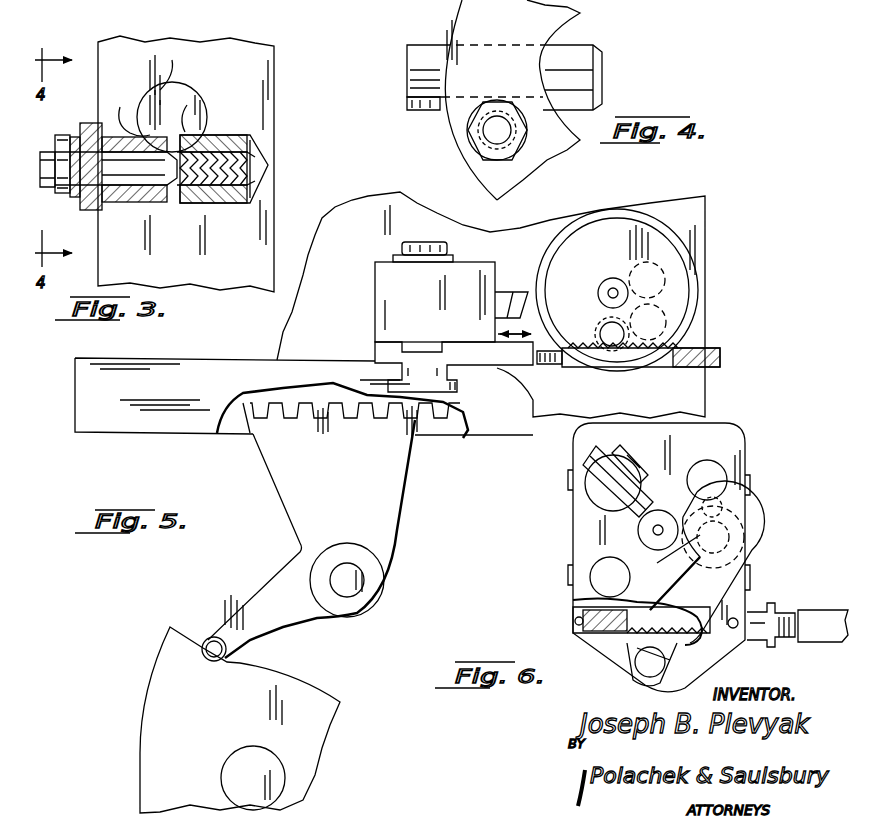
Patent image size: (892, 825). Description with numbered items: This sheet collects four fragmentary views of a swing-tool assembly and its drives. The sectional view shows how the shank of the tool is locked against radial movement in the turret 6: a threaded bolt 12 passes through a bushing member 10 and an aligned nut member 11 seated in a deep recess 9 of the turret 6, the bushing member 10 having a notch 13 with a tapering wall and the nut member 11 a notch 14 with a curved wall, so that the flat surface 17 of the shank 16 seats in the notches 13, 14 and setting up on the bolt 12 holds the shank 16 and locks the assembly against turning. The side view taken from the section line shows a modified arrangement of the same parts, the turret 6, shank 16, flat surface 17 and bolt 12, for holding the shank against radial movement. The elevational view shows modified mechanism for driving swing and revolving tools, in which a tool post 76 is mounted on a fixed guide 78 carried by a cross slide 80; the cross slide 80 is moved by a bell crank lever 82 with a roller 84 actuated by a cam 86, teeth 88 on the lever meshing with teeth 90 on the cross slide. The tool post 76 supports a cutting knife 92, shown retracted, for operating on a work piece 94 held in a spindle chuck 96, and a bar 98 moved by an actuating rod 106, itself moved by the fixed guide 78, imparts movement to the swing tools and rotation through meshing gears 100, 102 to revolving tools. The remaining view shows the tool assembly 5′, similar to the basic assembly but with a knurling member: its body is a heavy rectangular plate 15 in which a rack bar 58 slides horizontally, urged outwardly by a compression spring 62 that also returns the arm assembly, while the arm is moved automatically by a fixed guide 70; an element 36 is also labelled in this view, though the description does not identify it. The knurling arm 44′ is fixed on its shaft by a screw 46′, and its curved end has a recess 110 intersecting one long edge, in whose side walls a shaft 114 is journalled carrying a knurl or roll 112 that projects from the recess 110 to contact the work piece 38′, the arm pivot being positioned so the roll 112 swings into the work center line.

In FIG. 3, the turret 6 is at (265, 208).
In FIG. 4, the turret 6 is at (480, 10).
In FIG. 3, the deep recess 9 is at (248, 152).
In FIG. 3, the bushing member 10 is at (140, 205).
In FIG. 3, the nut member 11 is at (222, 205).
In FIG. 3, the threaded bolt 12 is at (46, 150).
In FIG. 4, the threaded bolt 12 is at (490, 133).
In FIG. 3, the notch 13 is at (170, 128).
In FIG. 3, the notch 14 is at (188, 111).
In FIG. 3, the shank 16 is at (165, 82).
In FIG. 4, the shank 16 is at (583, 47).
In FIG. 3, the flat surface 17 is at (122, 110).
In FIG. 4, the flat surface 17 is at (415, 103).
In FIG. 5, the tool post 76 is at (465, 277).
In FIG. 5, the fixed guide 78 is at (478, 352).
In FIG. 5, the cross slide 80 is at (205, 372).
In FIG. 5, the bell crank lever 82 is at (395, 497).
In FIG. 5, the roller 84 is at (210, 640).
In FIG. 5, the cam 86 is at (160, 698).
In FIG. 5, the teeth 88 is at (255, 433).
In FIG. 5, the teeth 90 is at (275, 430).
In FIG. 5, the cutting knife 92 is at (508, 291).
In FIG. 5, the work piece 94 is at (608, 290).
In FIG. 5, the spindle chuck 96 is at (621, 255).
In FIG. 5, the bar 98 is at (656, 358).
In FIG. 5, the meshing gear 100 is at (666, 282).
In FIG. 5, the meshing gear 102 is at (667, 323).
In FIG. 5, the actuating rod 106 is at (546, 368).
In FIG. 6, the tool assembly 5′ is at (752, 457).
In FIG. 6, the rectangular plate 15 is at (718, 437).
In FIG. 6, the lever arm 36 is at (590, 453).
In FIG. 6, the work piece 38′ is at (645, 535).
In FIG. 6, the arm 44′ is at (713, 595).
In FIG. 6, the screw 46′ is at (660, 672).
In FIG. 6, the rack bar 58 is at (660, 643).
In FIG. 6, the compression spring 62 is at (595, 618).
In FIG. 6, the fixed guide 70 is at (828, 620).
In FIG. 6, the recess 110 is at (744, 533).
In FIG. 6, the knurl or roll 112 is at (693, 515).
In FIG. 6, the shaft 114 is at (668, 554).